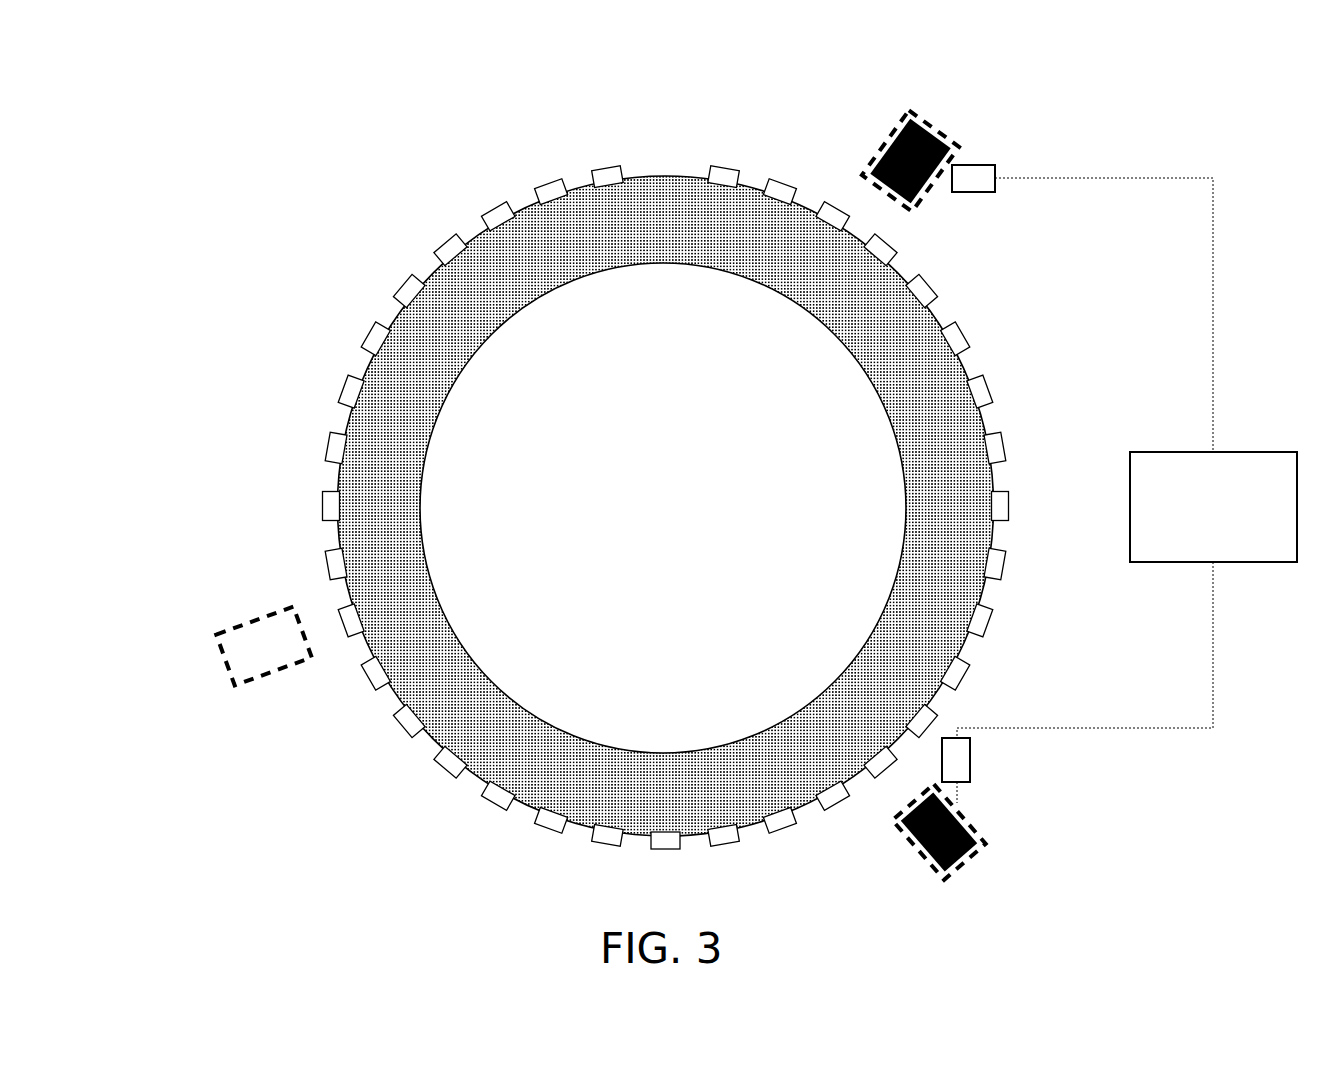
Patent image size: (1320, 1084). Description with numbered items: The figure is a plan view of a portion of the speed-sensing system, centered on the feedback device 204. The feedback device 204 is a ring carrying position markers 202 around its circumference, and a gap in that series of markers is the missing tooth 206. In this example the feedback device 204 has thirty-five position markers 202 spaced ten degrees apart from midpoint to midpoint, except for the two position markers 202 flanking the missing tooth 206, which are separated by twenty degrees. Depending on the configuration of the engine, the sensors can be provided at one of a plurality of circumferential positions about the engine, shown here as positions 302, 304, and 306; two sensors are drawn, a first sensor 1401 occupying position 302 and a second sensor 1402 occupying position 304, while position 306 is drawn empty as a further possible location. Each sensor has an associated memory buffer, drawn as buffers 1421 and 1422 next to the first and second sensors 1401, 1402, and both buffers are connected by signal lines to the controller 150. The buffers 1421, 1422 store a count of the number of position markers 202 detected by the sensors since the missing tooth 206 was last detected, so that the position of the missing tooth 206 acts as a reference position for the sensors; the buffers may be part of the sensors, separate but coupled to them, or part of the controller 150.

The feedback device 204 is at (385, 254).
The missing tooth 206 is at (702, 146).
The position markers 202 is at (323, 507).
The position 306 is at (220, 642).
The first sensor 1401 is at (928, 127).
The second sensor 1402 is at (958, 868).
The buffer 1421 is at (978, 192).
The buffer 1422 is at (970, 760).
The position 302 is at (955, 143).
The position 304 is at (978, 842).
The controller 150 is at (1189, 542).